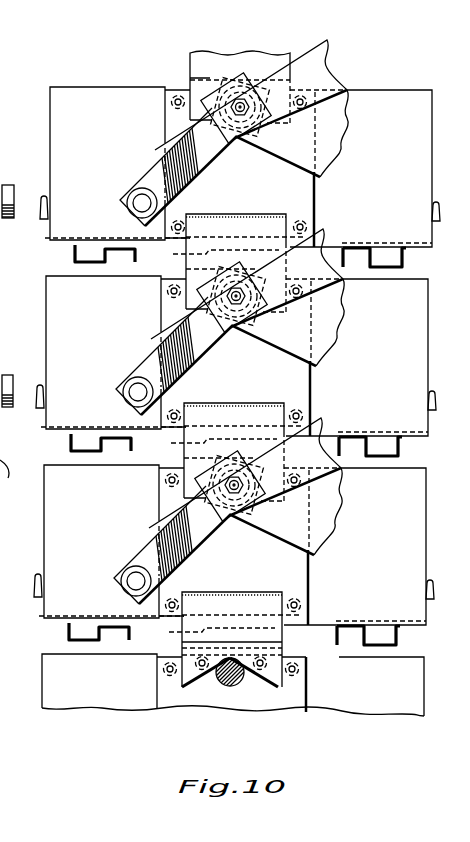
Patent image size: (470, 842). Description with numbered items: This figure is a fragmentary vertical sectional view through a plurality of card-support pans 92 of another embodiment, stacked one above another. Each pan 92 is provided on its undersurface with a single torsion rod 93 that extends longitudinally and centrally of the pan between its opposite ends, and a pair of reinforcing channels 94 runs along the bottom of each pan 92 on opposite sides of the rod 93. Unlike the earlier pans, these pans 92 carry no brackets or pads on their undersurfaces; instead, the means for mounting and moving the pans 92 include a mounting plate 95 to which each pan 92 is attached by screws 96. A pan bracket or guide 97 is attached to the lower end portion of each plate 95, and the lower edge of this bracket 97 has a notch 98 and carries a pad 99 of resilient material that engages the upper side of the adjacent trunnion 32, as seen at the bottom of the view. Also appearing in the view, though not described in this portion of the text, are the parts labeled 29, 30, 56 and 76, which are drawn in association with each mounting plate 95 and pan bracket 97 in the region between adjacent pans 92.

The blade holder plate 29 is at (302, 62).
The scraper blade 30 is at (292, 152).
The trunnion 32 is at (230, 678).
The threaded arm 56 is at (208, 153).
The roller 76 is at (137, 195).
The card-support pan 92 is at (99, 82).
The torsion rod 93 is at (187, 257).
The reinforcing channel 94 is at (75, 253).
The mounting plate 95 is at (303, 190).
The screw 96 is at (175, 97).
The pan bracket 97 is at (207, 62).
The notch 98 is at (252, 677).
The pad 99 is at (203, 680).